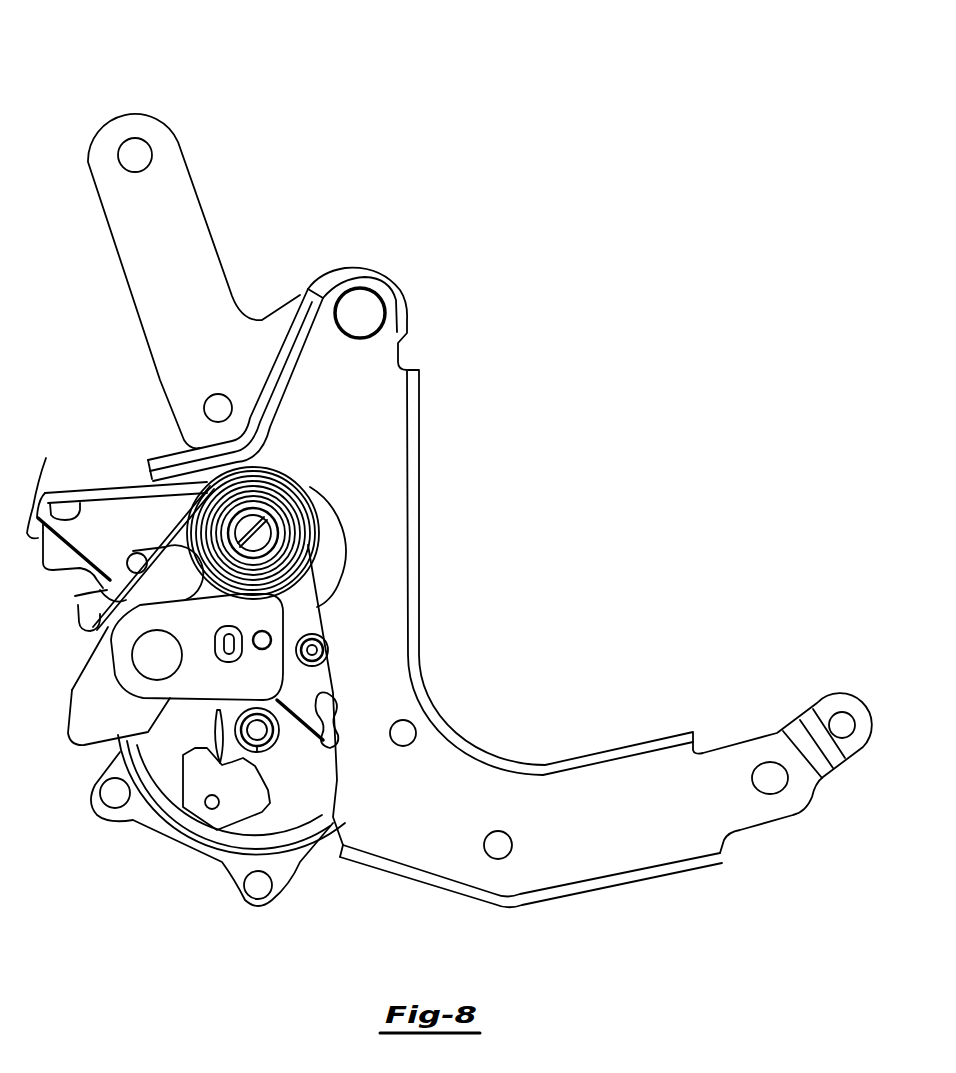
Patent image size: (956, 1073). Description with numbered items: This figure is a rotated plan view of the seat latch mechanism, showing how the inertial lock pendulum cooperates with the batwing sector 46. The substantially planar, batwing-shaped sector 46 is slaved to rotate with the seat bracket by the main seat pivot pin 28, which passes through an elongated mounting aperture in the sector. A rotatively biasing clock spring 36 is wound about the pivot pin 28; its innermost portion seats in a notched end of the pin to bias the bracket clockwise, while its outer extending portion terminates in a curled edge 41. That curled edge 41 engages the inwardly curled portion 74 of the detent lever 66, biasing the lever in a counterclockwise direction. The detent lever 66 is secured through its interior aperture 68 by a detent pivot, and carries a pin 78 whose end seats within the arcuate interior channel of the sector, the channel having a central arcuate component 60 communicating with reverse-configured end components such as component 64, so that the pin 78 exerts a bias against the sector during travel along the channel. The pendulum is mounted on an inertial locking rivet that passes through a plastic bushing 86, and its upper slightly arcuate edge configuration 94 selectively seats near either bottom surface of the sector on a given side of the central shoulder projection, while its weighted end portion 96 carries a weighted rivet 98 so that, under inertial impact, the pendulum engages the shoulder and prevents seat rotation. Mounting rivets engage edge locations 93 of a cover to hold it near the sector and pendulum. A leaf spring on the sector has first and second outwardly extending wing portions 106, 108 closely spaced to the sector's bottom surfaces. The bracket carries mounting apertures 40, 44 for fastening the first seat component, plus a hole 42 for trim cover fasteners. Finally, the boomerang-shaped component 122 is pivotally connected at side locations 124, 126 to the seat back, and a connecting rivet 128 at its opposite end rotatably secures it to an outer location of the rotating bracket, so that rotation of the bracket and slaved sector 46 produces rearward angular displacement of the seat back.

The main seat pivot pin 28 is at (392, 568).
The clock spring 36 is at (276, 468).
The mounting aperture 40 is at (502, 845).
The curled edge 41 is at (82, 632).
The hole 42 is at (407, 725).
The mounting aperture 44 is at (770, 778).
The batwing sector 46 is at (120, 510).
The central arcuate component 60 is at (184, 590).
The reverse configured arcuate component 64 is at (137, 555).
The detent lever 66 is at (140, 732).
The interior aperture 68 is at (143, 653).
The inwardly curled portion 74 is at (80, 596).
The pin 78 is at (265, 636).
The plastic bushing 86 is at (250, 728).
The edge locations 93 is at (112, 800).
The upper arcuate edge configuration 94 is at (307, 737).
The weighted end portion 96 is at (183, 785).
The weighted rivet 98 is at (210, 808).
The wing portion 106 is at (328, 712).
The wing portion 108 is at (41, 505).
The boomerang shaped component 122 is at (156, 284).
The side location 124 is at (221, 404).
The side location 126 is at (142, 152).
The connecting rivet 128 is at (362, 290).